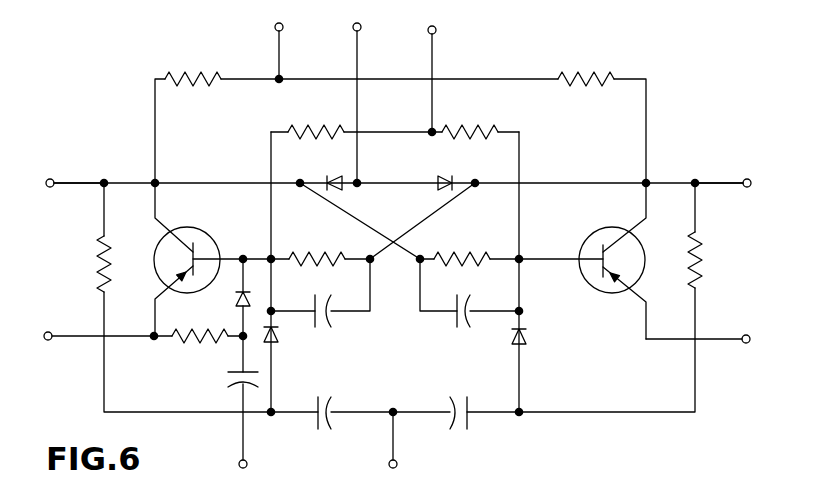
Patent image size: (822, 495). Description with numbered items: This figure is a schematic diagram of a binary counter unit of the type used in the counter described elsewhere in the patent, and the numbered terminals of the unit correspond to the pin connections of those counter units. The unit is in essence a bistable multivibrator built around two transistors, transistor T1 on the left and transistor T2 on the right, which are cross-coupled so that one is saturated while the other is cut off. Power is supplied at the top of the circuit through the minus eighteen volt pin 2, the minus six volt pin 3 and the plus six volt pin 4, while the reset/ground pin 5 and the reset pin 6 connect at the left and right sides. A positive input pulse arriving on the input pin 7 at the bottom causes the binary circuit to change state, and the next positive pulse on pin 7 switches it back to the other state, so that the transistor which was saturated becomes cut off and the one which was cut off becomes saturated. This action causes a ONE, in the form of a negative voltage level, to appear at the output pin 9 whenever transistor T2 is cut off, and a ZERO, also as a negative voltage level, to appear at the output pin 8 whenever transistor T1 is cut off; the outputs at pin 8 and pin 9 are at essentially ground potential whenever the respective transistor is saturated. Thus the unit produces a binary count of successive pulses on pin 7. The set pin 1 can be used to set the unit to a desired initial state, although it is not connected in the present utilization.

The set pin 1 is at (256, 376).
The -18V supply pin 2 is at (298, 41).
The -6V supply pin 3 is at (371, 93).
The +6V supply pin 4 is at (450, 68).
The reset/ground pin 5 is at (130, 354).
The reset pin 6 is at (705, 349).
The input pin 7 is at (404, 453).
The ZERO output pin 8 is at (63, 190).
The ONE output pin 9 is at (738, 193).
The transistor T1 is at (187, 259).
The transistor T2 is at (612, 261).